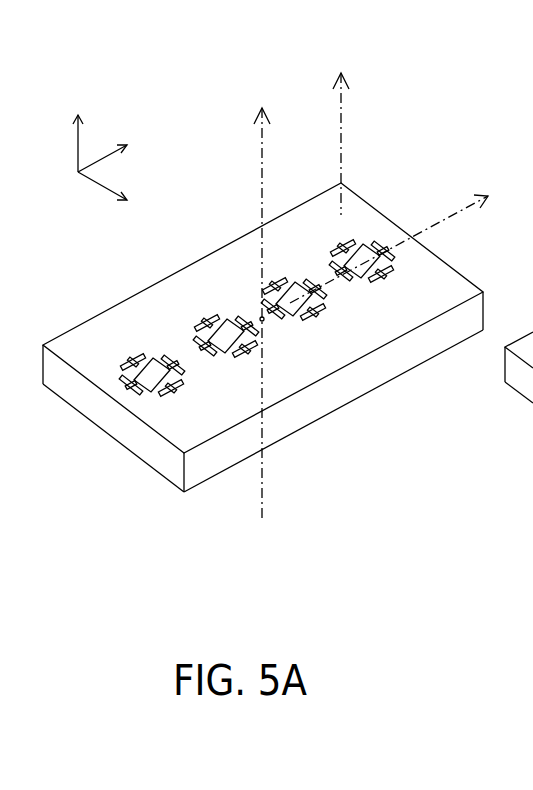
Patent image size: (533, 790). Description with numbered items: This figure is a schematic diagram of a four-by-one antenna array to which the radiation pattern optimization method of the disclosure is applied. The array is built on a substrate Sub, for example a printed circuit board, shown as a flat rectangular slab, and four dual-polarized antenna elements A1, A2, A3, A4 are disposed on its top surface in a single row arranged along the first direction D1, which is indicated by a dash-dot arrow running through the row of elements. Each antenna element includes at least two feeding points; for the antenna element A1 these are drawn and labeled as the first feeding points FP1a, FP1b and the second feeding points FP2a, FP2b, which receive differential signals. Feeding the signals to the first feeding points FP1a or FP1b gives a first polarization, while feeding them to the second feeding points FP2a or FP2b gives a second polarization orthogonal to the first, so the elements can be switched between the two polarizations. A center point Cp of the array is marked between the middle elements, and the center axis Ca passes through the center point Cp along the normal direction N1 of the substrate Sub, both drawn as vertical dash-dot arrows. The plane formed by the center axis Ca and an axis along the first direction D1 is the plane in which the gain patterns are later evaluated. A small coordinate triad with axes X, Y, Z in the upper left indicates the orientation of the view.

The substrate Sub is at (310, 407).
The antenna element A1 is at (181, 383).
The antenna element A2 is at (249, 343).
The antenna element A3 is at (319, 300).
The antenna element A4 is at (392, 264).
The first feeding point FP1a is at (134, 362).
The first feeding point FP1b is at (172, 391).
The second feeding point FP2a is at (173, 366).
The second feeding point FP2b is at (132, 389).
The center point Cp is at (262, 319).
The center axis Ca is at (261, 299).
The normal direction N1 is at (340, 131).
The first direction D1 is at (405, 242).
The X axis X is at (81, 129).
The Y axis Y is at (112, 194).
The Z axis Z is at (115, 149).